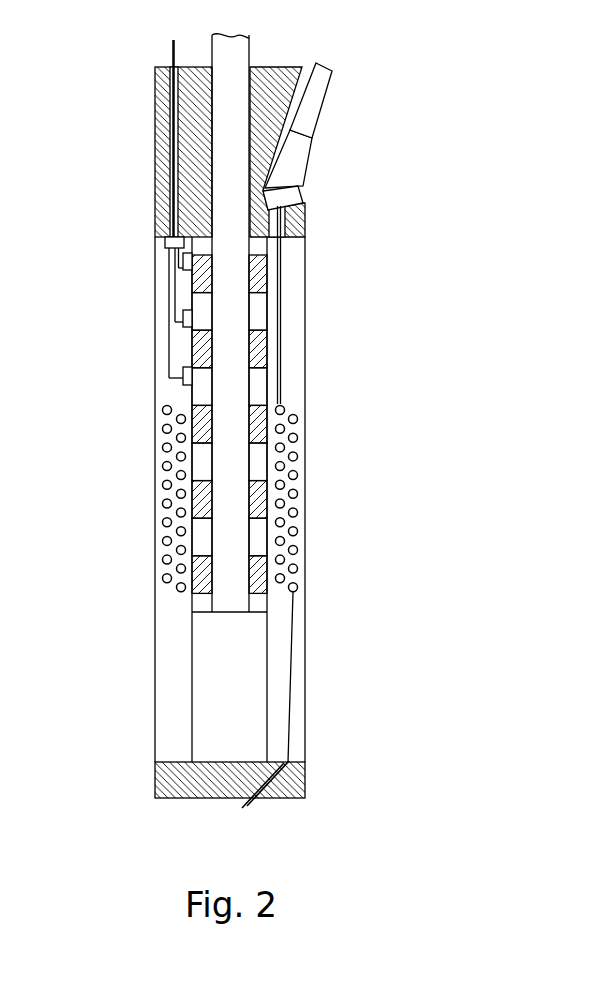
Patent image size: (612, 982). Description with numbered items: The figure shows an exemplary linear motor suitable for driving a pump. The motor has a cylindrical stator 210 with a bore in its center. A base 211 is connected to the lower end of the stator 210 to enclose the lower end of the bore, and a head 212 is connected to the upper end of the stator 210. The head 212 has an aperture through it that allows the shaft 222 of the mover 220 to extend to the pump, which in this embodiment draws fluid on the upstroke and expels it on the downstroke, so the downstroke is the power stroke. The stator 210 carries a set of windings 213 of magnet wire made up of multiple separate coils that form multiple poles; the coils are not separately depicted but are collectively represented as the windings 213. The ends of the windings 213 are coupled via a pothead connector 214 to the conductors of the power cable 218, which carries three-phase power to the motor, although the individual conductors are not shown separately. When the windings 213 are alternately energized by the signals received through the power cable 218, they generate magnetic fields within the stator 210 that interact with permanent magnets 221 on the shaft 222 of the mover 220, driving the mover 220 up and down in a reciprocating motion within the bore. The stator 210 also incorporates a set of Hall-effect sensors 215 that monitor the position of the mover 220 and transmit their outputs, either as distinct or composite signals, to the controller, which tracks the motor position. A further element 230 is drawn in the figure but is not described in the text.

The cylindrical stator 210 is at (155, 357).
The base 211 is at (307, 780).
The head 212 is at (155, 121).
The windings 213 is at (315, 405).
The pothead connector 214 is at (303, 180).
The Hall-effect sensors 215 is at (183, 265).
The power cable 218 is at (329, 94).
The mover 220 is at (209, 615).
The permanent magnets 221 is at (268, 347).
The shaft 222 is at (207, 307).
The conductor 230 is at (172, 47).